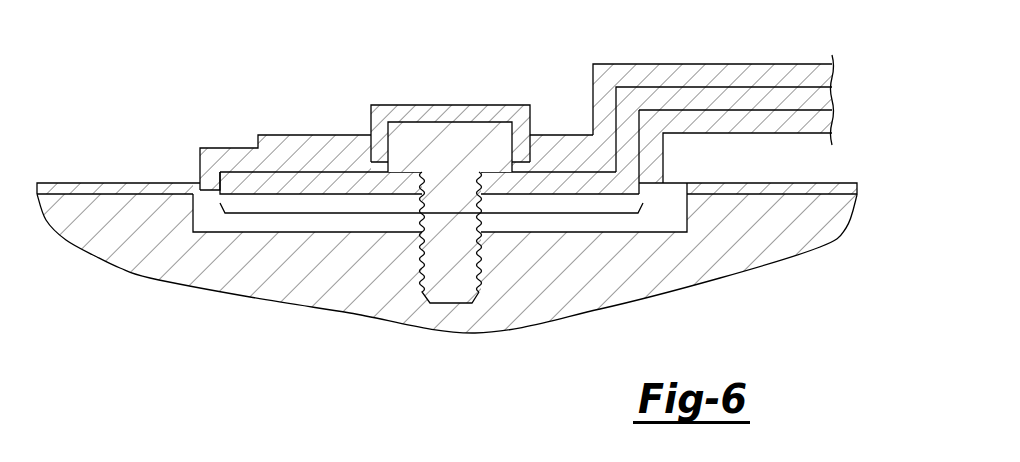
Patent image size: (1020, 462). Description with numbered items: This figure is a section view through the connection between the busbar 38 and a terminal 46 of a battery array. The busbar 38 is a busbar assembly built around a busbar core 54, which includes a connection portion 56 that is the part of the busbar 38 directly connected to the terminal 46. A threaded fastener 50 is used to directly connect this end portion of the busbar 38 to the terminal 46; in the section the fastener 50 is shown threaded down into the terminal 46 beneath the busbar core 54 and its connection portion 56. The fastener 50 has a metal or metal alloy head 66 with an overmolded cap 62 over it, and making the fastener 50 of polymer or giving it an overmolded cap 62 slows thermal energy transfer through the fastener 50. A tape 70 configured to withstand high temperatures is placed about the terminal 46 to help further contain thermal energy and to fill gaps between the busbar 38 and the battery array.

The busbar 38 is at (685, 63).
The terminal 46 is at (227, 233).
The threaded fastener 50 is at (495, 105).
The busbar core 54 is at (775, 87).
The connection portion 56 is at (570, 213).
The overmolded cap 62 is at (397, 105).
The head 66 is at (463, 122).
The tape 70 is at (835, 188).